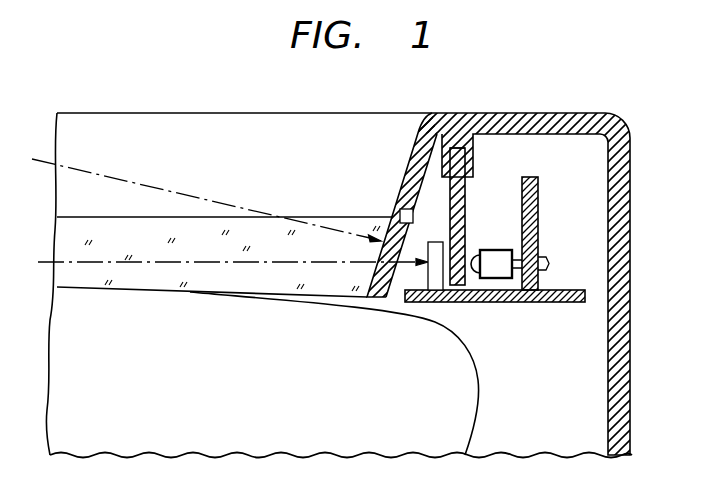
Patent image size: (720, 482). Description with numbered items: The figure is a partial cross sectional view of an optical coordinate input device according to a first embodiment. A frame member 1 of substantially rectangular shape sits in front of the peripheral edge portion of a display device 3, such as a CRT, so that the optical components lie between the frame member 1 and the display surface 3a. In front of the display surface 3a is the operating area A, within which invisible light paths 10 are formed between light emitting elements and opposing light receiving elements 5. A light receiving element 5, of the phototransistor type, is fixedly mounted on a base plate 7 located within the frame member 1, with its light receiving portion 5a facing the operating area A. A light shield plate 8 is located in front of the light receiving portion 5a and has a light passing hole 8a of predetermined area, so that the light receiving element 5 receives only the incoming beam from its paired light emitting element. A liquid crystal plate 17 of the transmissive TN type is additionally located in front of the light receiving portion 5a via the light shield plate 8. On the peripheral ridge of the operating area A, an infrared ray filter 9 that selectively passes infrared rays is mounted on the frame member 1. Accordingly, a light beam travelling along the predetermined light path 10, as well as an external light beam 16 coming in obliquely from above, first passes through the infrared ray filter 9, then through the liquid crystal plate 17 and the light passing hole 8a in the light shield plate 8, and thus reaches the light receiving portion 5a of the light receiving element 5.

The frame member 1 is at (622, 128).
The display device 3 is at (52, 347).
The display surface 3a is at (70, 285).
The light receiving element 5 is at (500, 250).
The light receiving portion 5a is at (472, 257).
The base plate 7 is at (538, 178).
The light shield plate 8 is at (458, 148).
The light passing hole 8a is at (443, 253).
The infrared ray filter 9 is at (390, 216).
The light path 10 is at (200, 258).
The external light beam 16 is at (123, 180).
The liquid crystal plate 17 is at (453, 305).
The operating area A is at (102, 225).